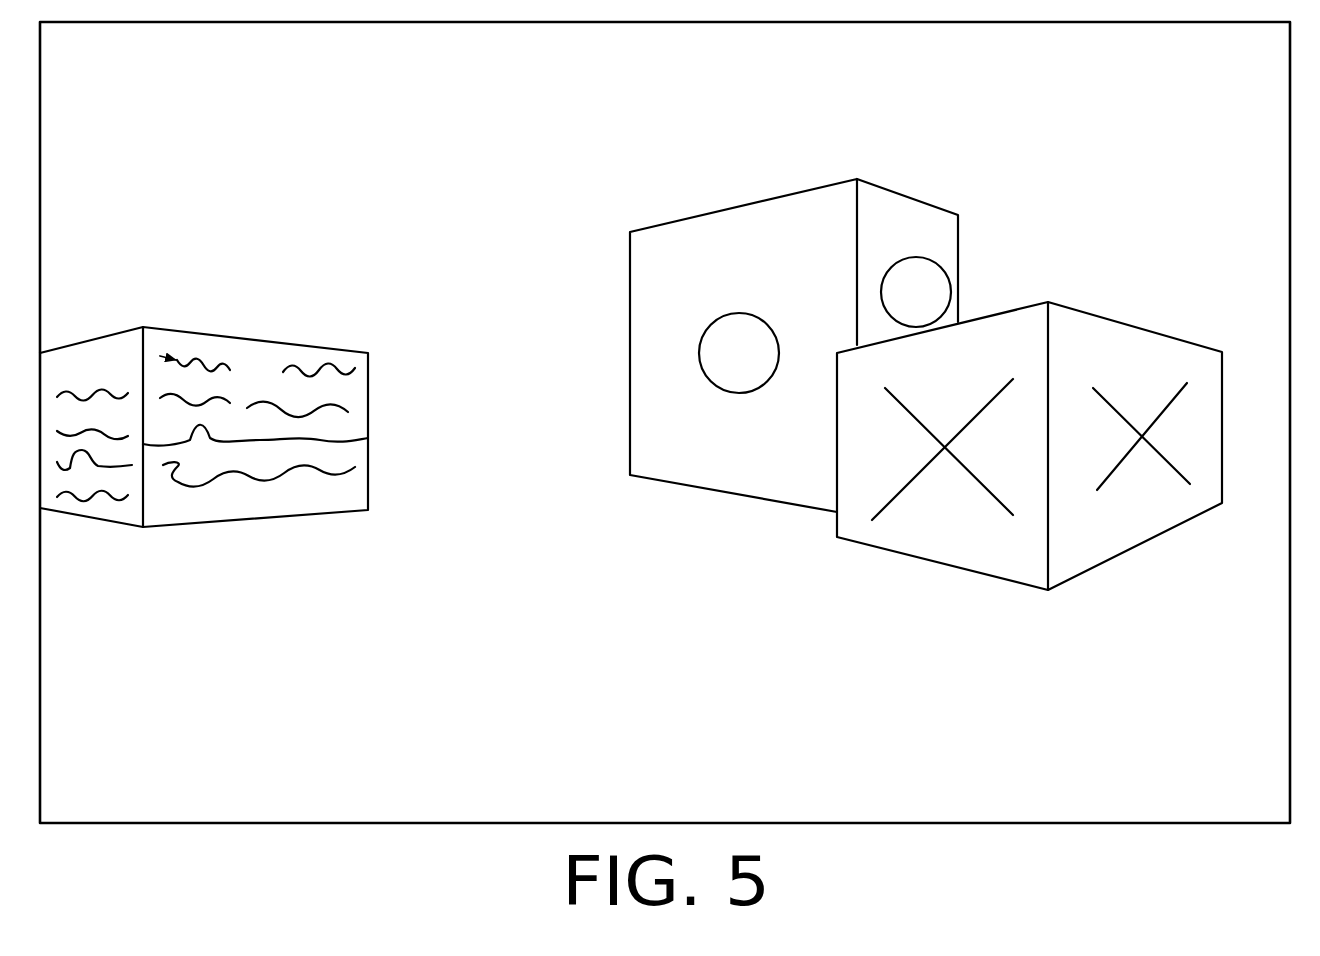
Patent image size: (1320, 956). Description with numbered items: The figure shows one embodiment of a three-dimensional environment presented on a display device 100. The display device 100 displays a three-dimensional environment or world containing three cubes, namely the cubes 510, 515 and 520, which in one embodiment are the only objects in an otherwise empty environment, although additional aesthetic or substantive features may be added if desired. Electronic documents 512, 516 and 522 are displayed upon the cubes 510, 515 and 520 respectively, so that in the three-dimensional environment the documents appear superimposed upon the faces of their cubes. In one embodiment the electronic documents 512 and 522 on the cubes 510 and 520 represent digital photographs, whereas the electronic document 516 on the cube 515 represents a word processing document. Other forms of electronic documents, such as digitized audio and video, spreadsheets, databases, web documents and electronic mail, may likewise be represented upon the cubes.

The display device 100 is at (1265, 804).
The cube 510 is at (1105, 318).
The electronic document 512 is at (935, 508).
The cube 515 is at (237, 337).
The electronic document 516 is at (54, 382).
The cube 520 is at (755, 202).
The electronic document 522 is at (902, 250).